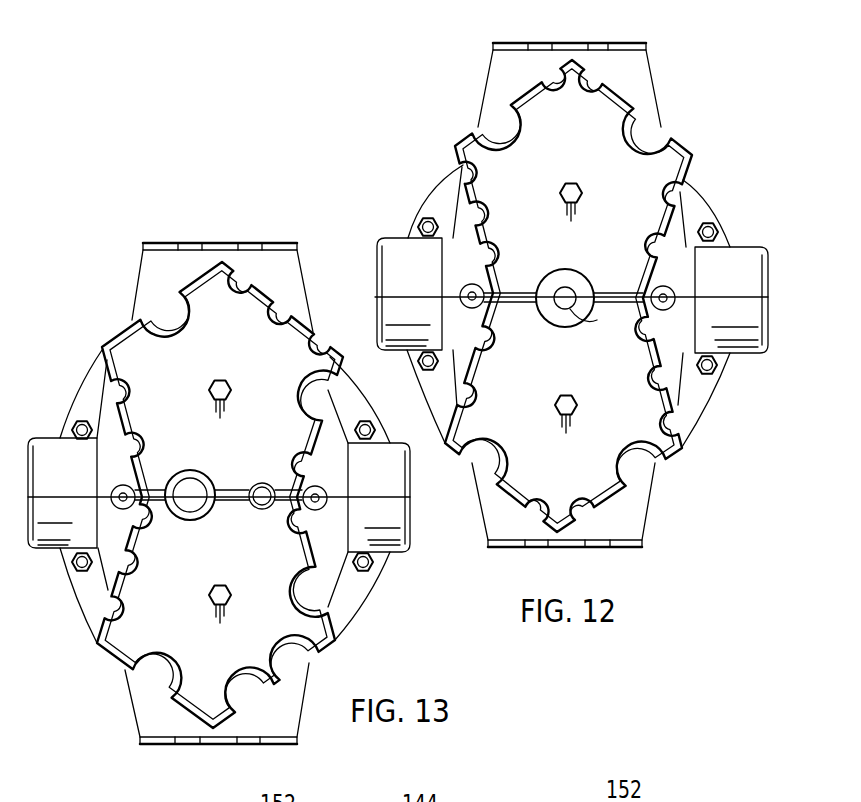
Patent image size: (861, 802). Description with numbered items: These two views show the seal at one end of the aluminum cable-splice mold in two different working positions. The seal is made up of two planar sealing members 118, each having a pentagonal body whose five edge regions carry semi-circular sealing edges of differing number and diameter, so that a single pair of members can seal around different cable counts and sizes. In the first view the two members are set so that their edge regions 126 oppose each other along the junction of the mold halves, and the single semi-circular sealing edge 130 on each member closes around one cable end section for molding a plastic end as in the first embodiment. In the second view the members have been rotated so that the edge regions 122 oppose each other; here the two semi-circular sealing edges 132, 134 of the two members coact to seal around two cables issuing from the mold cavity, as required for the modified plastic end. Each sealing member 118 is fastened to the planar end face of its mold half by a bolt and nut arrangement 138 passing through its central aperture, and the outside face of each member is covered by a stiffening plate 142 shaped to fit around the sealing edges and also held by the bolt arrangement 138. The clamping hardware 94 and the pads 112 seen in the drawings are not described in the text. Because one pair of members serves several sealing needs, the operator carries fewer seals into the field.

In FIG. 12, the clamp bracket 94 is at (424, 221).
In FIG. 13, the clamp bracket 94 is at (76, 422).
In FIG. 12, the pad 112 is at (490, 65).
In FIG. 13, the pad 112 is at (327, 279).
In FIG. 13, the sealing member 118 is at (114, 340).
In FIG. 13, the edge region 122 is at (212, 478).
In FIG. 12, the edge region 126 is at (553, 274).
In FIG. 12, the semi-circular sealing edge 130 is at (574, 290).
In FIG. 13, the semi-circular sealing edge 132 is at (192, 470).
In FIG. 13, the semi-circular sealing edge 134 is at (264, 482).
In FIG. 12, the bolt and nut arrangement 138 is at (607, 175).
In FIG. 13, the bolt and nut arrangement 138 is at (229, 386).
In FIG. 12, the stiffening plate 142 is at (505, 112).
In FIG. 13, the stiffening plate 142 is at (157, 297).